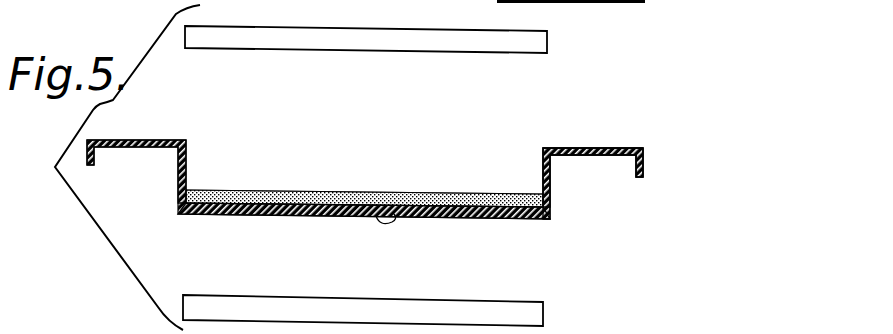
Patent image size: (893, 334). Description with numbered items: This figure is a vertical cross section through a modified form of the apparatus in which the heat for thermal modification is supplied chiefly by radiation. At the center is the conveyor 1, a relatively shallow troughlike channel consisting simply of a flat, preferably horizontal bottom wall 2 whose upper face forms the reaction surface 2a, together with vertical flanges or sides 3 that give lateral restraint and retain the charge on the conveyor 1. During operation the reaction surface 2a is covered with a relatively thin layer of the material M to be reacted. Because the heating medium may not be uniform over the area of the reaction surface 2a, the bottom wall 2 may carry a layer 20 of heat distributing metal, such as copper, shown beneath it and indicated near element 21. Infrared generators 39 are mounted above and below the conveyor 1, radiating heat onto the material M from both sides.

The conveyor 1 is at (199, 139).
The bottom wall 2 is at (403, 213).
The reaction surface 2a is at (343, 208).
The sides 3 is at (187, 166).
The material M is at (280, 192).
The layer of heat distributing metal 20 is at (527, 220).
The lower electrode 21 is at (585, 326).
The infrared generators 39 is at (535, 43).